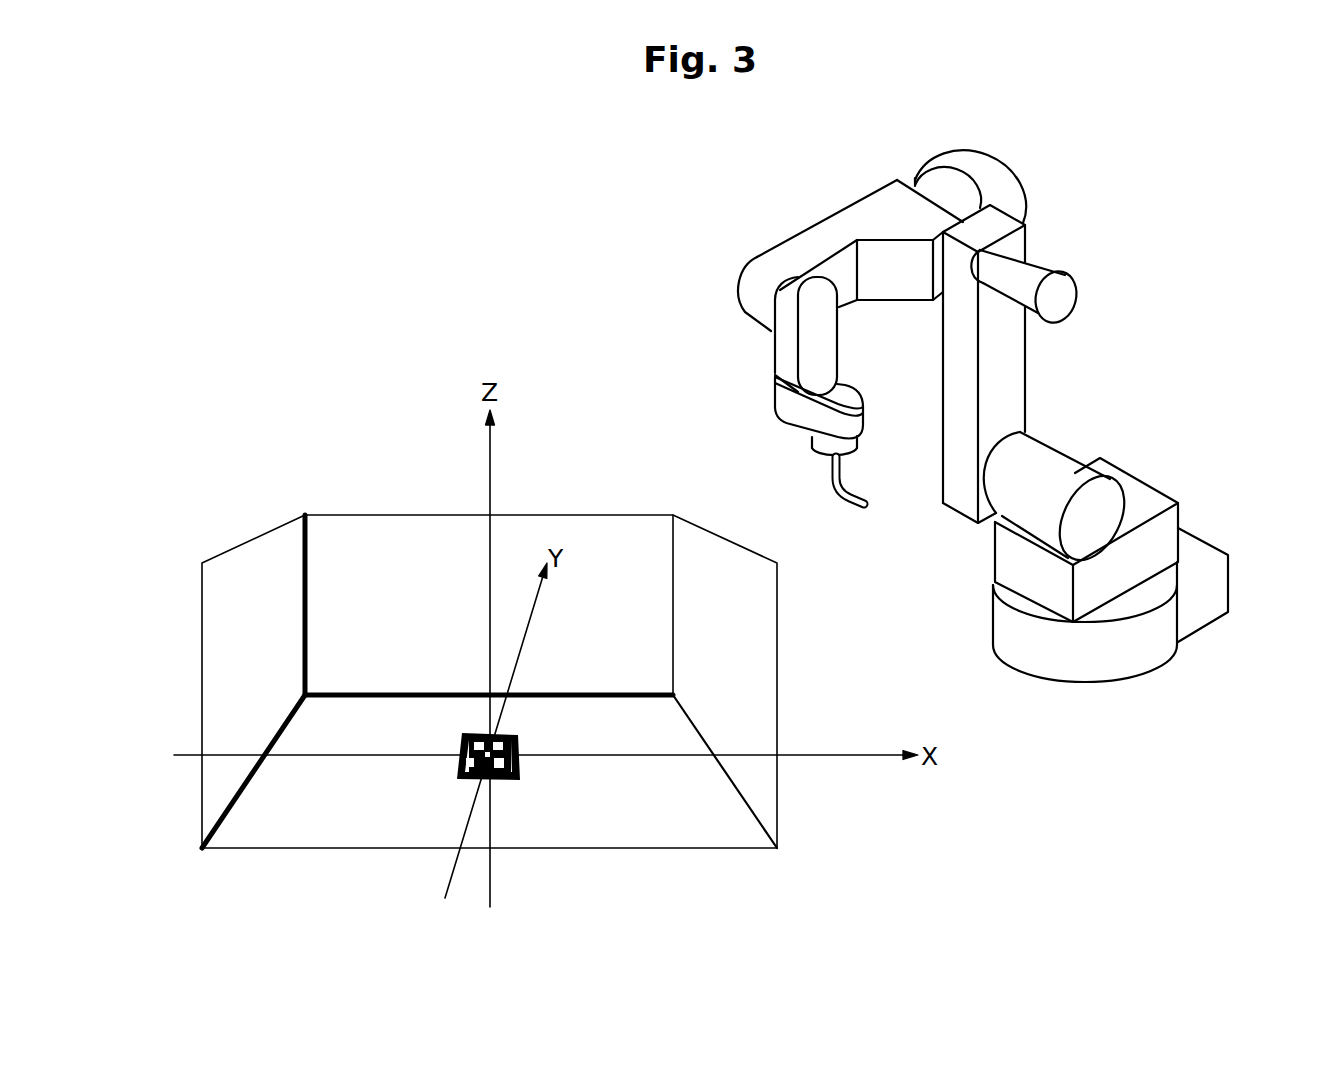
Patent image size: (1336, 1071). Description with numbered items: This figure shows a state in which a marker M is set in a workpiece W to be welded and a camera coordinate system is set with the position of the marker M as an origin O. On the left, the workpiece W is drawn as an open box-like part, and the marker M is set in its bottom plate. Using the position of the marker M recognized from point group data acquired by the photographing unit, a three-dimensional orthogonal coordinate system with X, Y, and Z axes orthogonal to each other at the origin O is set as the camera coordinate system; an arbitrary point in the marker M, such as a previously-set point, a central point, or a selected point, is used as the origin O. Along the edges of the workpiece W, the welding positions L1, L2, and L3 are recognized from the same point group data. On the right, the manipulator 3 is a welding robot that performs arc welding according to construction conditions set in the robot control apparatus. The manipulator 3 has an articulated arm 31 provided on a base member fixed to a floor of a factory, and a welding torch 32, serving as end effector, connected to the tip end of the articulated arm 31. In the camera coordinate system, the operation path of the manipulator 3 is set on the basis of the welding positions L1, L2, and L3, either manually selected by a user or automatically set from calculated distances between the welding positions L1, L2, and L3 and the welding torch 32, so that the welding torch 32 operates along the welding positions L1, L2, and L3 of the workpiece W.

The manipulator 3 is at (983, 389).
The articulated arm 31 is at (786, 250).
The welding torch 32 is at (862, 418).
The marker M is at (520, 745).
The origin O is at (489, 757).
The workpiece W is at (489, 664).
The welding position L1 is at (253, 771).
The welding position L2 is at (489, 677).
The welding position L3 is at (286, 605).